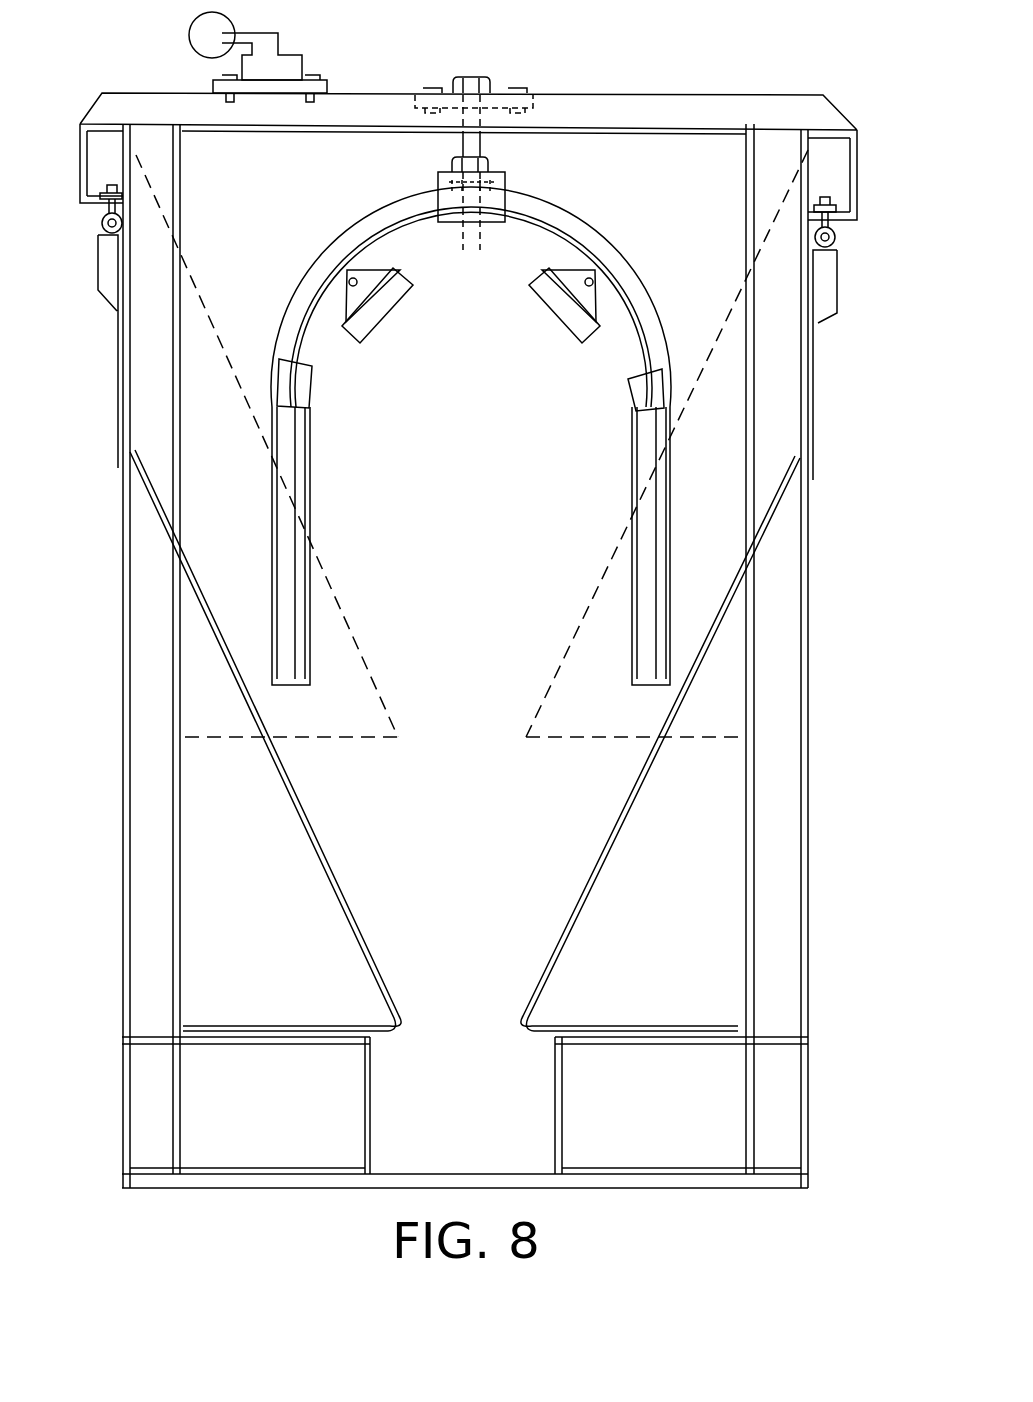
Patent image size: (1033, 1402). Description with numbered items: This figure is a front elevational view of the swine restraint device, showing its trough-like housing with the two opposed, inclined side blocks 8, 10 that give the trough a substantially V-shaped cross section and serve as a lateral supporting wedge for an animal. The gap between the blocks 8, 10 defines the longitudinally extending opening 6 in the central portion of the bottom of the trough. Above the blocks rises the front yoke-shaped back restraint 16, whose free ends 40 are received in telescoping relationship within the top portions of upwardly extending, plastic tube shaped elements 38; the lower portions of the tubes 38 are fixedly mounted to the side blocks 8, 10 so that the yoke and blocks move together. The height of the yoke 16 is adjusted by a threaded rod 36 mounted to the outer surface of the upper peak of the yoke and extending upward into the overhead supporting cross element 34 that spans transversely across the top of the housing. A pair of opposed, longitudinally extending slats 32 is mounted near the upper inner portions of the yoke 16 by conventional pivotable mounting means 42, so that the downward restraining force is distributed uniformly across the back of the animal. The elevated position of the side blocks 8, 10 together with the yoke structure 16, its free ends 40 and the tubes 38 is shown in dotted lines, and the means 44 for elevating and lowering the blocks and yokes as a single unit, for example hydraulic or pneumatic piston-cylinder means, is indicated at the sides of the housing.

The opening 6 is at (447, 1012).
The block 8 is at (327, 727).
The block 10 is at (603, 723).
The front restraint 16 is at (352, 243).
The slats 32 is at (378, 326).
The cross element 34 is at (572, 84).
The threaded rod 36 is at (481, 147).
The tube shaped elements 38 is at (300, 573).
The free end 40 is at (313, 368).
The pivotable mounting means 42 is at (350, 300).
The elevating and lowering means 44 is at (98, 272).